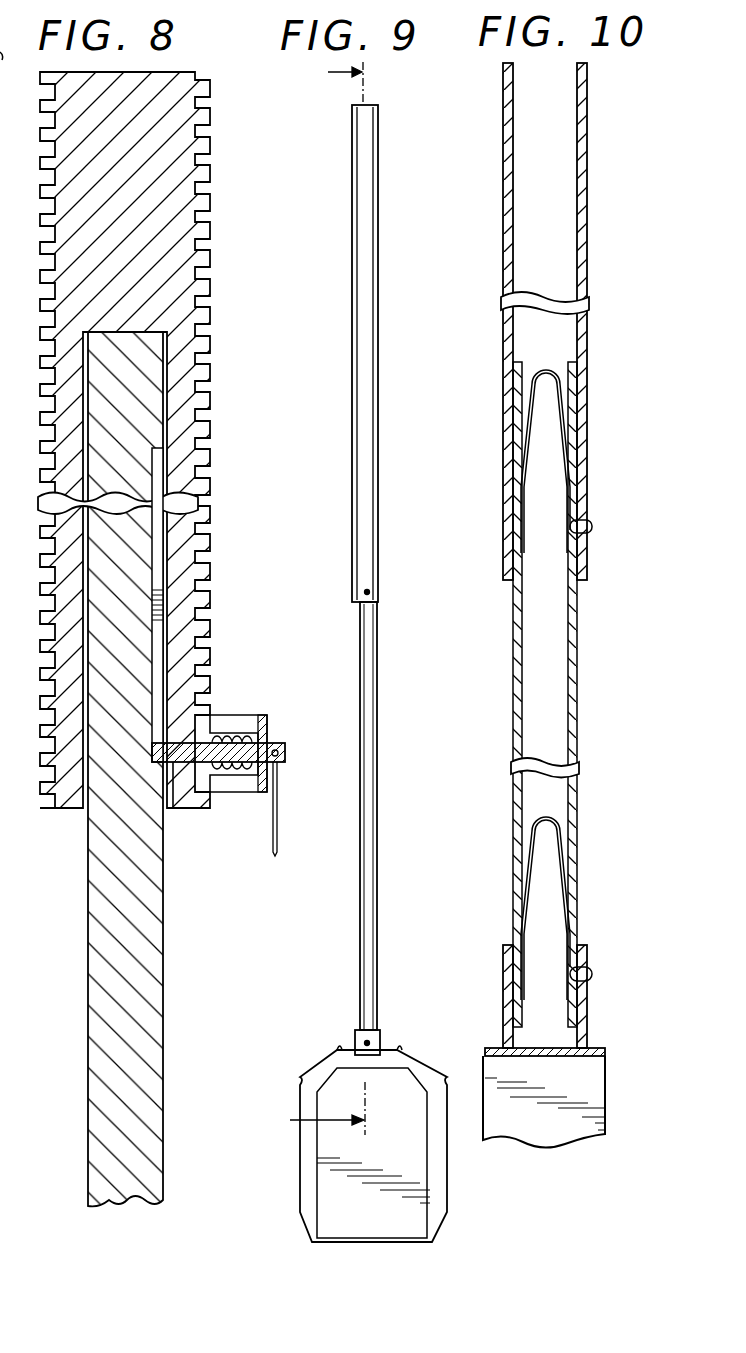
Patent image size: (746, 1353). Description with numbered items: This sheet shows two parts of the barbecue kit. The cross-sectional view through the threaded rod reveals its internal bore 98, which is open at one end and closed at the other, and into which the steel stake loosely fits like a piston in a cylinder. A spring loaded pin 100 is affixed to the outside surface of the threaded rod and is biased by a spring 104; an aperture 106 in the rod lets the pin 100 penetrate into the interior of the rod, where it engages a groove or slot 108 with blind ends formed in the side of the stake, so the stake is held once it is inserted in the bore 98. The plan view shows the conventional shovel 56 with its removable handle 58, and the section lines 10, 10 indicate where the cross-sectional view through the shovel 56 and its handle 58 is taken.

In FIG. 9, the section lines 10 is at (309, 600).
In FIG. 9, the shovel 56 is at (358, 1212).
In FIG. 10, the shovel 56 is at (523, 1125).
In FIG. 9, the removable handle 58 is at (378, 178).
In FIG. 10, the removable handle 58 is at (503, 108).
In FIG. 8, the internal bore 98 is at (86, 531).
In FIG. 8, the spring loaded pin 100 is at (277, 748).
In FIG. 8, the spring 104 is at (240, 741).
In FIG. 8, the aperture 106 is at (178, 765).
In FIG. 8, the groove or slot 108 is at (157, 543).